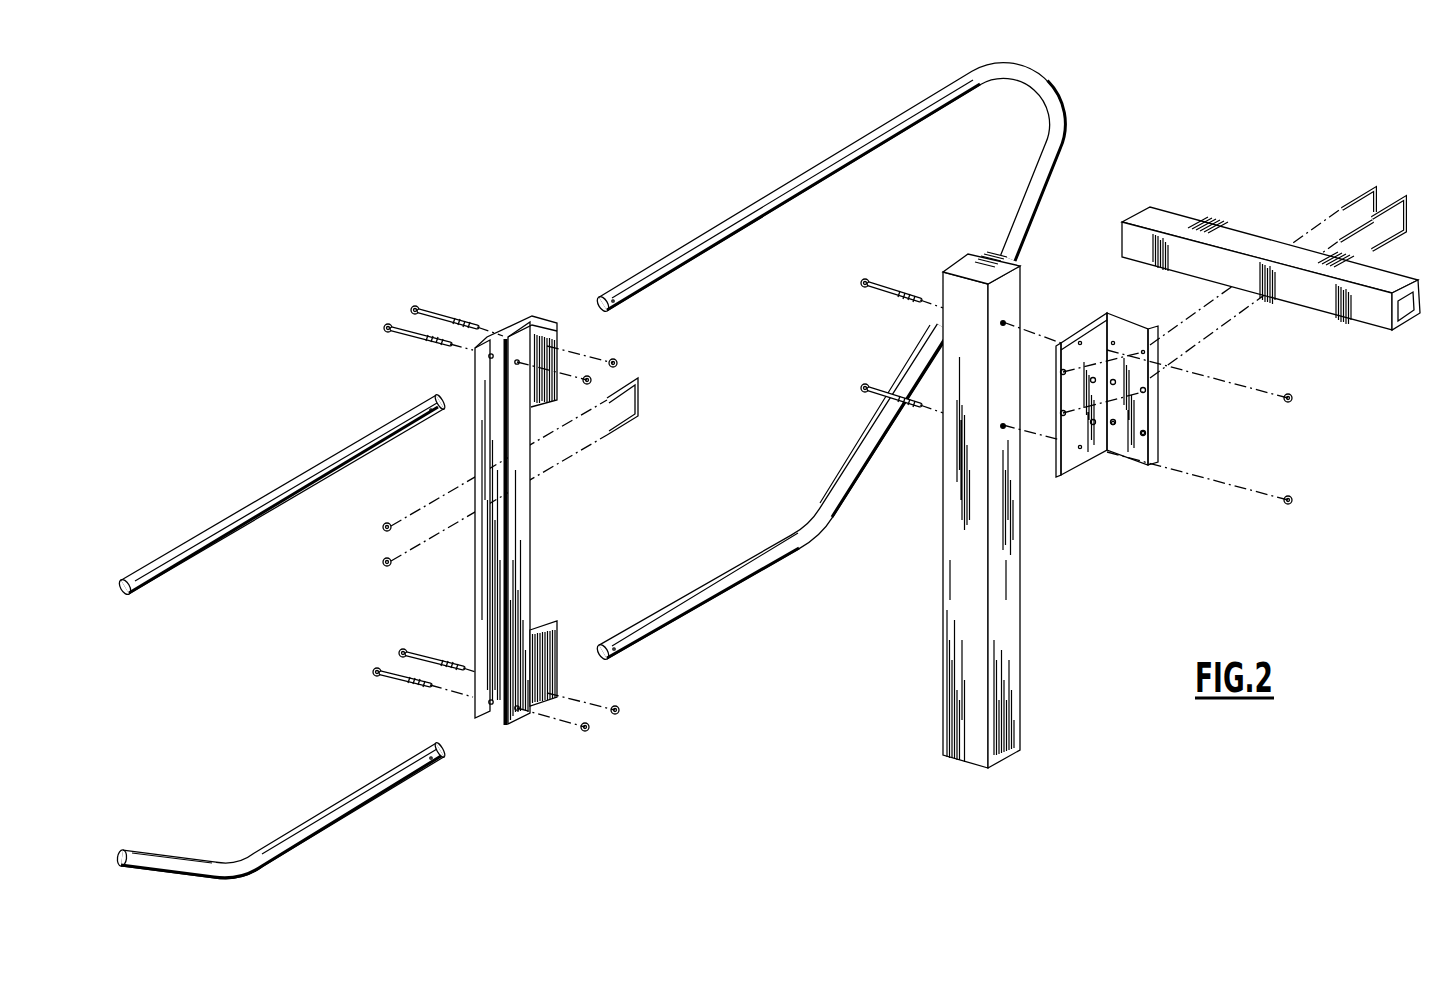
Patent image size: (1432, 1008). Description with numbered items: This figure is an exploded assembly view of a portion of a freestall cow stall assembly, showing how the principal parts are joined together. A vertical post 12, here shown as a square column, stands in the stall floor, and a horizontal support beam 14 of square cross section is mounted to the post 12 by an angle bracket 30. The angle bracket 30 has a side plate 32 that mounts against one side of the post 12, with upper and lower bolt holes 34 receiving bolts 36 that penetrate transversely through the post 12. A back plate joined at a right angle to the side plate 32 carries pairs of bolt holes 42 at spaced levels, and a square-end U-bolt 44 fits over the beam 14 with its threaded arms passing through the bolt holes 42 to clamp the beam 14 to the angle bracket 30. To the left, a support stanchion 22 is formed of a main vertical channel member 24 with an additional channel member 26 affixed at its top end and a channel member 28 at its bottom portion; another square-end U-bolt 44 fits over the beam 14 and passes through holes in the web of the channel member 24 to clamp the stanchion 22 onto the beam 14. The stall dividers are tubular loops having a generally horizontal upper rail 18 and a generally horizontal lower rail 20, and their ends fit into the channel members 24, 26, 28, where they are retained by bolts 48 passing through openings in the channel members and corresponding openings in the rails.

The vertical post 12 is at (1013, 612).
The horizontal support beam 14 is at (1175, 217).
The upper rail 18 is at (774, 198).
The lower rail 20 is at (348, 812).
The support stanchion 22 is at (493, 493).
The main vertical channel member 24 is at (532, 542).
The additional channel member 26 is at (530, 320).
The channel member 28 is at (548, 625).
The angle bracket 30 is at (1172, 360).
The side plate 32 is at (1066, 449).
The bolt holes 34 is at (1080, 343).
The bolts 36 is at (866, 285).
The bolt holes 42 is at (1143, 352).
The square-end U-bolt 44 is at (1377, 200).
The bolts 48 is at (414, 311).